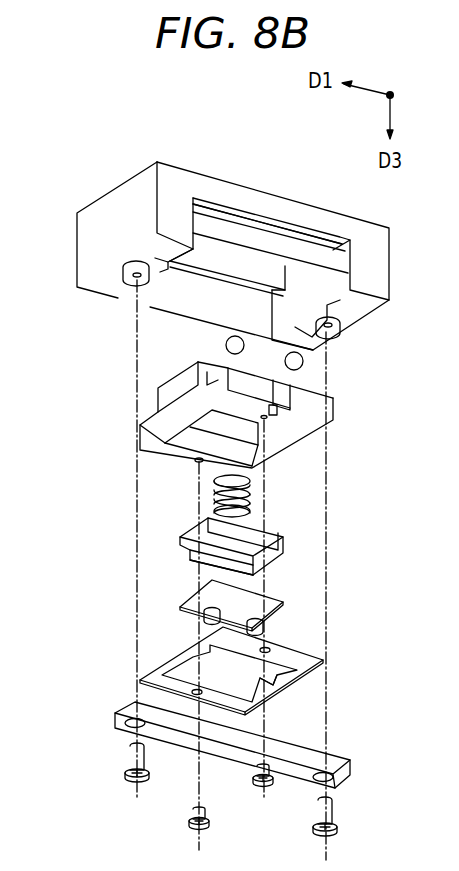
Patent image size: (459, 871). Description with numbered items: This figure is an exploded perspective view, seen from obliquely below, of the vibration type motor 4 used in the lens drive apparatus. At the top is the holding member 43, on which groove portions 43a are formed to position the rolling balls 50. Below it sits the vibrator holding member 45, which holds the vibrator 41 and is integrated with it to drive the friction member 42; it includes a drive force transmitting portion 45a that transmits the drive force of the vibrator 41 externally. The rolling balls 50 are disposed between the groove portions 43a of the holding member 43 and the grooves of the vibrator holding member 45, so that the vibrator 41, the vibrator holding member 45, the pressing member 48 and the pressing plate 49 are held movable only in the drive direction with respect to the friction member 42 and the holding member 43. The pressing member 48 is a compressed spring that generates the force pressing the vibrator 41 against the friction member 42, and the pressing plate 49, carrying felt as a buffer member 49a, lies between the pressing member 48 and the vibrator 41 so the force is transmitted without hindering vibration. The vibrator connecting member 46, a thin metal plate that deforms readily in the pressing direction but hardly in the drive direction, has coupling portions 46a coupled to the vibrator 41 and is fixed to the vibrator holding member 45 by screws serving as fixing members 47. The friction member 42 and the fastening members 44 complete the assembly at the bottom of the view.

The vibration type motor 4 is at (272, 168).
The vibrator 41 is at (172, 593).
The friction member 42 is at (116, 703).
The holding member 43 is at (85, 244).
The groove portions 43a is at (290, 230).
The fastening members 44 is at (128, 757).
The vibrator holding member 45 is at (170, 406).
The drive force transmitting portion 45a is at (278, 417).
The vibrator connecting member 46 is at (157, 670).
The coupling portions 46a is at (282, 676).
The fixing members 47 is at (188, 817).
The pressing member 48 is at (212, 495).
The pressing plate 49 is at (180, 535).
The buffer member 49a is at (250, 566).
The rolling balls 50 is at (285, 368).